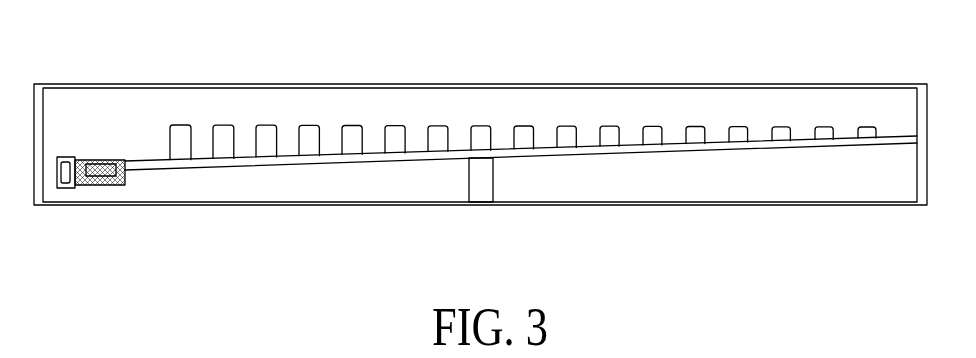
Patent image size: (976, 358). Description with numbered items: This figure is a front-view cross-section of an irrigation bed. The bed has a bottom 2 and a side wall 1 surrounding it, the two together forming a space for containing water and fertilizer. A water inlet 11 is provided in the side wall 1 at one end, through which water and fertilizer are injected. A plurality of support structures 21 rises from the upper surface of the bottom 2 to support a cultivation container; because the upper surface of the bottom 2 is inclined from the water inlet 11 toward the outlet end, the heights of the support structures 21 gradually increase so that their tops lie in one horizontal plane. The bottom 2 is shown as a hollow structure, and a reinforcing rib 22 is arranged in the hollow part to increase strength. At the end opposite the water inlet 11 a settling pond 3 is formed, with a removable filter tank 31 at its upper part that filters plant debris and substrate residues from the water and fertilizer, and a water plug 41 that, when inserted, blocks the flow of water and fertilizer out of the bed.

The side wall 1 is at (912, 120).
The water inlet 11 is at (925, 128).
The bottom 2 is at (593, 160).
The support structures 21 is at (743, 142).
The reinforcing rib 22 is at (477, 183).
The settling pond 3 is at (115, 186).
The filter tank 31 is at (98, 168).
The water plug 41 is at (72, 188).